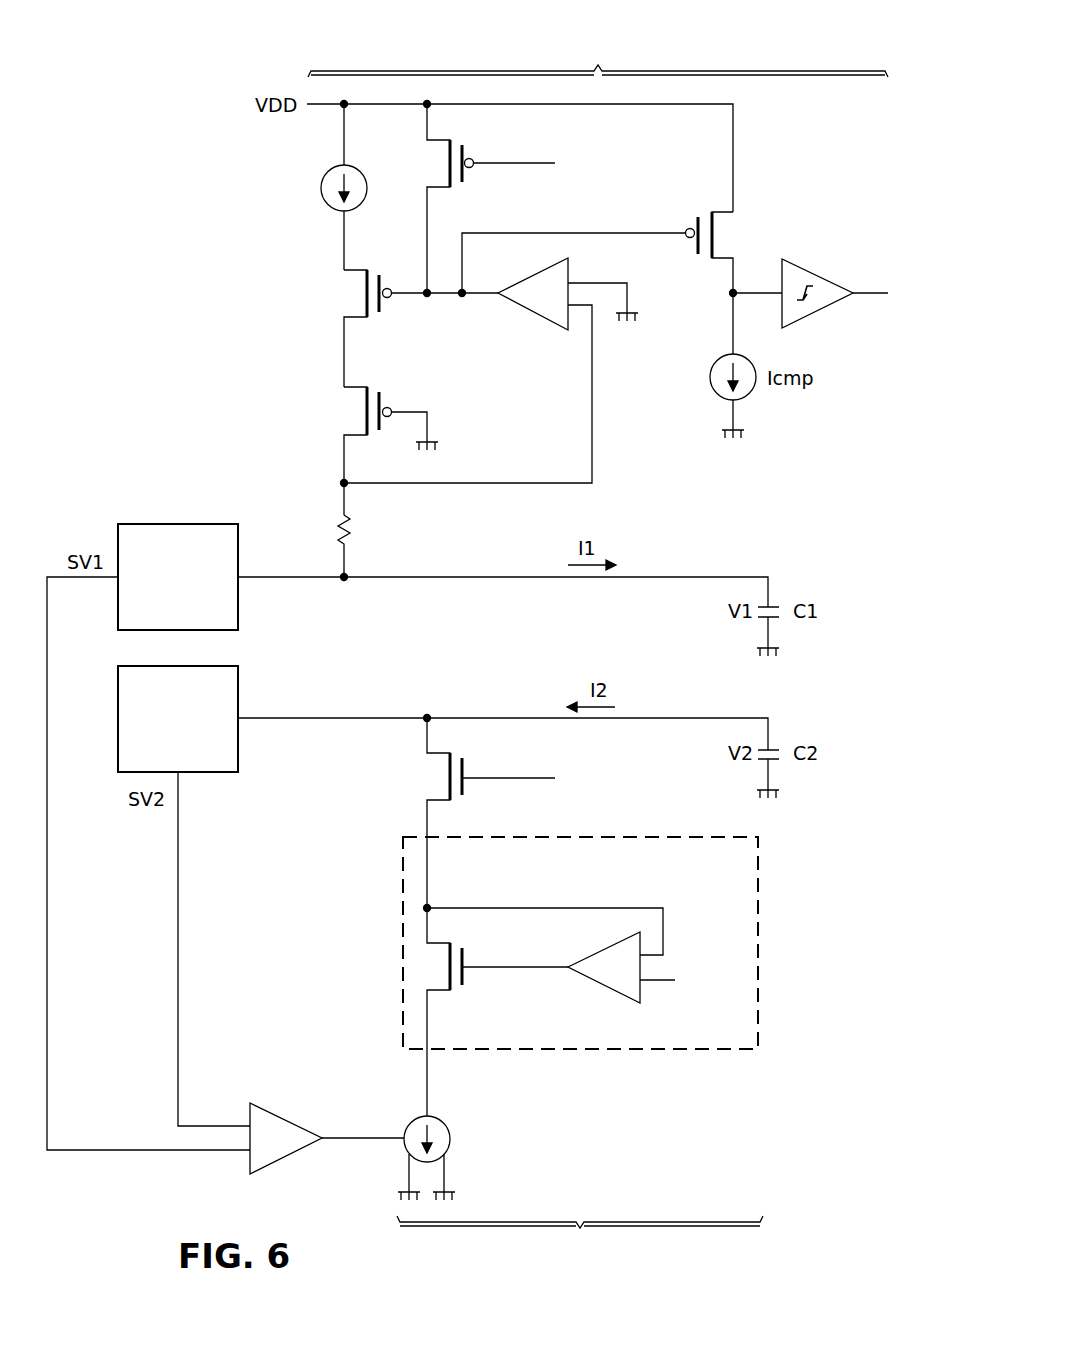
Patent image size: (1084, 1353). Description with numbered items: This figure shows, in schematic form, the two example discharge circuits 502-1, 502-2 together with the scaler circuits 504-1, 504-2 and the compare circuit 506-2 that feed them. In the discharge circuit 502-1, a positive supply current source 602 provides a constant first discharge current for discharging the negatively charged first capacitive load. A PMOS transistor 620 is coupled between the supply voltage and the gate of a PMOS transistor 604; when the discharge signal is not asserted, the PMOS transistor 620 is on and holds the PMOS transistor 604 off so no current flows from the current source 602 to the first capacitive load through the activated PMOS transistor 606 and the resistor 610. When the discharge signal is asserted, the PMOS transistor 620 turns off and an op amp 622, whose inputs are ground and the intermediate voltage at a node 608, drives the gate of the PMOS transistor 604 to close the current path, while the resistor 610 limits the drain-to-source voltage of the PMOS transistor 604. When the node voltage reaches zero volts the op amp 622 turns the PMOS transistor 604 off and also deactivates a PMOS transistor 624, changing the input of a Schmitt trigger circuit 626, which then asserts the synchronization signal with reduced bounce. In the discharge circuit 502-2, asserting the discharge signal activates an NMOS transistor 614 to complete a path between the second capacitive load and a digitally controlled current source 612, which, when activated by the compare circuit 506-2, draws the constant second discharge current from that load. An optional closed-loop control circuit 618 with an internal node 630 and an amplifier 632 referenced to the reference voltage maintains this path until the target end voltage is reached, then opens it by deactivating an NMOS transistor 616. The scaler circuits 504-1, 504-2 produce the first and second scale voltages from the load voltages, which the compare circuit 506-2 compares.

The discharge circuit 502-1 is at (598, 57).
The discharge circuit 502-2 is at (580, 1240).
The scaler circuit 504-1 is at (178, 524).
The scaler circuit 504-2 is at (240, 696).
The compare circuit 506-2 is at (290, 1160).
The positive supply current source 602 is at (322, 186).
The PMOS transistor 604 is at (391, 300).
The PMOS transistor 606 is at (391, 404).
The node 608 is at (349, 488).
The resistor 610 is at (338, 530).
The digitally controlled current source 612 is at (436, 1118).
The NMOS transistor 614 is at (465, 790).
The NMOS transistor 616 is at (465, 980).
The closed-loop control circuit 618 is at (760, 957).
The PMOS transistor 620 is at (470, 157).
The op amp 622 is at (534, 318).
The PMOS transistor 624 is at (692, 224).
The Schmitt trigger circuit 626 is at (812, 276).
The node 630 is at (430, 904).
The amplifier 632 is at (602, 990).